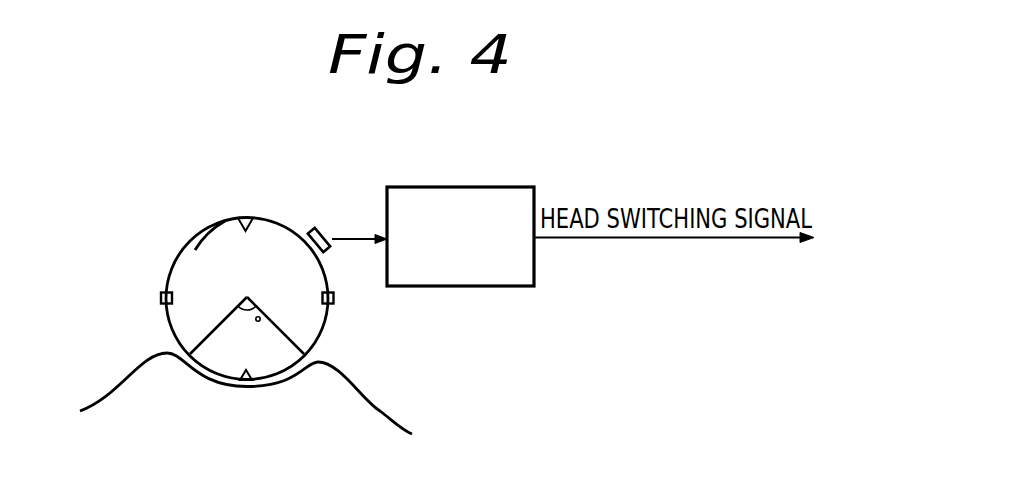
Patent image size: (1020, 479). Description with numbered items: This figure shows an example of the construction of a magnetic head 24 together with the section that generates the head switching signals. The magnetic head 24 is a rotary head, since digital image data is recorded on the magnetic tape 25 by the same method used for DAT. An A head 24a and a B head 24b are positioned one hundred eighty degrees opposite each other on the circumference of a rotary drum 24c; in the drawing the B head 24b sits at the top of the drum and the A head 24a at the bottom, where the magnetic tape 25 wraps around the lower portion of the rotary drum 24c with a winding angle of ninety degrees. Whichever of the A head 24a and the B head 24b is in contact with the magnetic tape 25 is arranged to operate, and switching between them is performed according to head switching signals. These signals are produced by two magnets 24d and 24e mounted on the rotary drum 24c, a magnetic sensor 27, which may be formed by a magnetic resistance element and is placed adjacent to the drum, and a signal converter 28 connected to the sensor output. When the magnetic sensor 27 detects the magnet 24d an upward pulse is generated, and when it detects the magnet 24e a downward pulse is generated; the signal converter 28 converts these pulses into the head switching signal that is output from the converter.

The magnetic head 24 is at (282, 203).
The A head 24a is at (244, 383).
The B head 24b is at (246, 216).
The rotary drum 24c is at (213, 244).
The magnet 24d is at (165, 292).
The magnet 24e is at (334, 302).
The magnetic tape 25 is at (378, 412).
The magnetic sensor 27 is at (322, 229).
The signal converter 28 is at (517, 187).